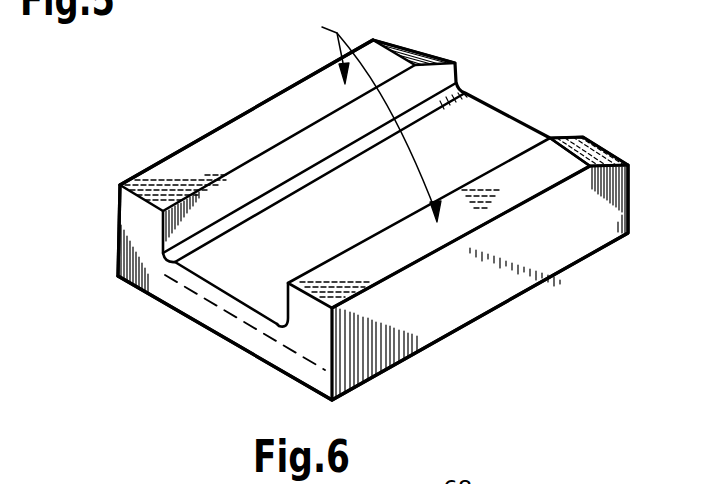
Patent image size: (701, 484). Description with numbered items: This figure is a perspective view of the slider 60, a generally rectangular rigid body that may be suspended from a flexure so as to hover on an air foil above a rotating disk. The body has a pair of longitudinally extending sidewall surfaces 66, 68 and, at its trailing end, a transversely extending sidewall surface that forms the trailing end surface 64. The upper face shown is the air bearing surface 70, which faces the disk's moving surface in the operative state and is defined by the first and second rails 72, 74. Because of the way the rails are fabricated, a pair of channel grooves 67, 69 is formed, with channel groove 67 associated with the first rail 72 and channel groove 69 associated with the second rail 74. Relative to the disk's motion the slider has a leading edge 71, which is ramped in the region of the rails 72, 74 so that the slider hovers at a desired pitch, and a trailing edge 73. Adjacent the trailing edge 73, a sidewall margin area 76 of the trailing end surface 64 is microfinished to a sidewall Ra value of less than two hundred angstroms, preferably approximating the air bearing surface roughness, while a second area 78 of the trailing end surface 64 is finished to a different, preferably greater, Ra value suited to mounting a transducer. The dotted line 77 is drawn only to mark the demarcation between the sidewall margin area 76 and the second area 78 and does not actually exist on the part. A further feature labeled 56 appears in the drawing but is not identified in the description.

The ramp surface at end of rail 56 is at (573, 147).
The slider 60 is at (510, 59).
The trailing end surface 64 is at (192, 302).
The longitudinally extending sidewall surface 66 is at (483, 294).
The channel groove 67 is at (280, 315).
The longitudinally extending sidewall surface 68 is at (290, 86).
The channel groove 69 is at (282, 197).
The air bearing surface 70 is at (366, 118).
The leading edge 71 is at (437, 57).
The first rail 72 is at (523, 172).
The trailing edge 73 is at (138, 194).
The second rail 74 is at (208, 158).
The sidewall margin area 76 is at (118, 210).
The dotted line 77 is at (255, 325).
The second area 78 is at (135, 285).